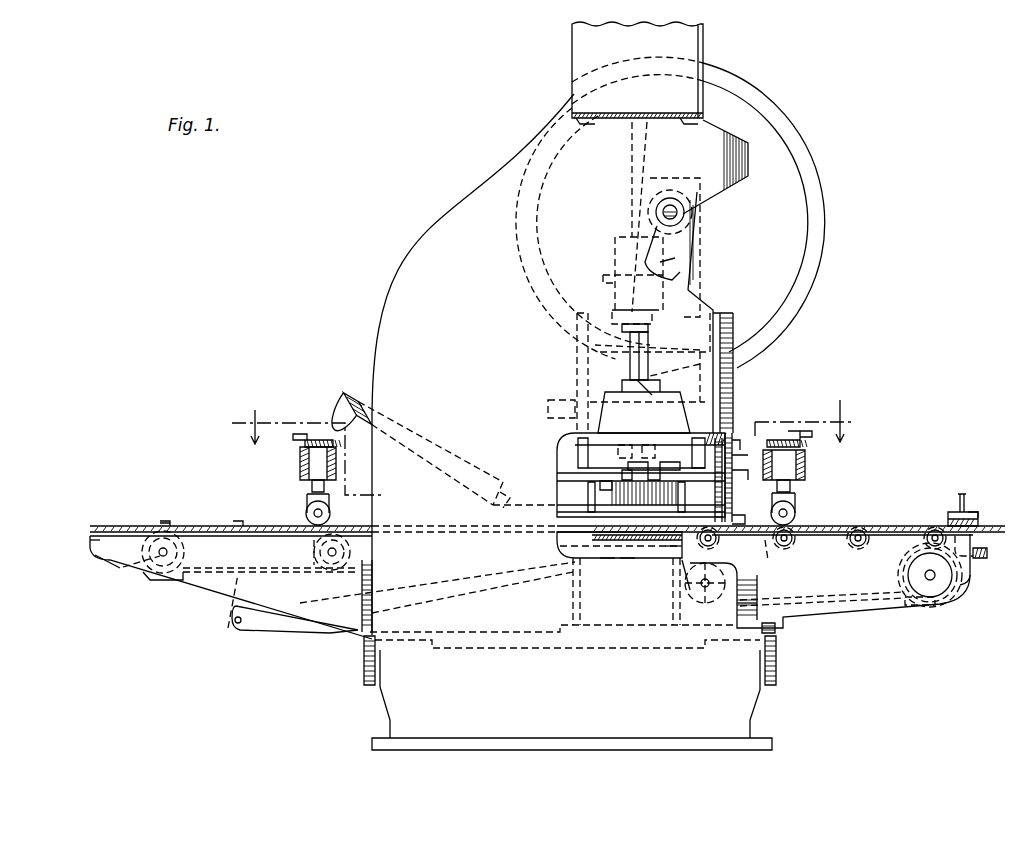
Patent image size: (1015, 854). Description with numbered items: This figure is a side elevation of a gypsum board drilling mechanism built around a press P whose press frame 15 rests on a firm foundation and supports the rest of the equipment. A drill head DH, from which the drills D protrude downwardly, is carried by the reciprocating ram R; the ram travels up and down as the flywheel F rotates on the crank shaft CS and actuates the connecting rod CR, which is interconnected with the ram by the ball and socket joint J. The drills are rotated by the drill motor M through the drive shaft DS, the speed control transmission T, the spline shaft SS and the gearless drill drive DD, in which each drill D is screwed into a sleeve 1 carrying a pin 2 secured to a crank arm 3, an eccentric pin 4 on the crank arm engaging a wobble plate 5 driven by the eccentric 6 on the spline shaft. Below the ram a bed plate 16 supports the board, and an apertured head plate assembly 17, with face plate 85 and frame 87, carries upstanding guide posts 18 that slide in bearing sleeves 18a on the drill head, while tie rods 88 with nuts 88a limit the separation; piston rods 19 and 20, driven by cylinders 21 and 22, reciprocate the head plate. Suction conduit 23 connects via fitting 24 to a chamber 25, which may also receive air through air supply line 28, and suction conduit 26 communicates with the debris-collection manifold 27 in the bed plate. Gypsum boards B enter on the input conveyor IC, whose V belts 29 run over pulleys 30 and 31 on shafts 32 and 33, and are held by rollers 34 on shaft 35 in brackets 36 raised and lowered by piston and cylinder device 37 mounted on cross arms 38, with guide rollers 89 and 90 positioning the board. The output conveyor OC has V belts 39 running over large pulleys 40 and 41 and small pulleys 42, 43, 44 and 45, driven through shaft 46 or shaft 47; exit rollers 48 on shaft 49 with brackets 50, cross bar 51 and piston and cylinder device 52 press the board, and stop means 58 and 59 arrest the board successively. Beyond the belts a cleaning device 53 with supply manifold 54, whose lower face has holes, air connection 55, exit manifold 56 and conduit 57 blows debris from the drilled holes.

The drill motor M is at (576, 55).
The flywheel F is at (825, 197).
The press P is at (382, 292).
The press frame 15 is at (432, 230).
The drive shaft DS is at (630, 152).
The speed control transmission T is at (612, 247).
The crank shaft CS is at (684, 215).
The connecting rod CR is at (692, 248).
The spline shaft SS is at (621, 347).
The ram R is at (590, 439).
The ball and socket joint J is at (722, 364).
The drill head DH is at (557, 477).
The gearless drill drive DD is at (590, 460).
The drill D is at (726, 508).
The gypsum board B is at (152, 516).
The input conveyor IC is at (217, 583).
The output conveyor OC is at (884, 615).
The sleeve 1 is at (629, 474).
The pin 2 is at (543, 436).
The crank arm 3 is at (638, 460).
The pin 4 is at (726, 443).
The wobble plate 5 is at (668, 458).
The eccentric 6 is at (637, 380).
The bed plate 16 is at (568, 540).
The head plate assembly 17 is at (560, 533).
The guide post 18 is at (560, 497).
The bearing sleeve 18a is at (566, 450).
The piston rod 19 is at (726, 462).
The piston rod 20 is at (566, 487).
The cylinder 21 is at (728, 440).
The cylinder 22 is at (558, 432).
The suction conduit 23 is at (345, 400).
The fitting 24 is at (498, 506).
The chamber 25 is at (677, 568).
The suction conduit 26 is at (266, 632).
The debris-collection manifold 27 is at (624, 562).
The air supply line 28 is at (733, 522).
The V belt 29 is at (232, 606).
The pulley 30 is at (118, 567).
The pulley 31 is at (318, 552).
The shaft 32 is at (163, 557).
The shaft 33 is at (332, 560).
The roller 34 is at (305, 512).
The shaft 35 is at (312, 501).
The bracket 36 is at (310, 490).
The piston and cylinder device 37 is at (305, 444).
The cross arm 38 is at (300, 462).
The V belt 39 is at (100, 545).
The large pulley 40 is at (962, 588).
The large pulley 41 is at (738, 582).
The small pulley 42 is at (928, 541).
The small pulley 43 is at (858, 548).
The small pulley 44 is at (789, 548).
The small pulley 45 is at (716, 546).
The shaft 46 is at (927, 576).
The shaft 47 is at (742, 603).
The exit roller 48 is at (798, 521).
The shaft 49 is at (795, 514).
The bracket 50 is at (792, 508).
The cross bar 51 is at (805, 468).
The piston and cylinder device 52 is at (802, 442).
The cleaning device 53 is at (969, 513).
The supply manifold 54 is at (950, 521).
The connection 55 is at (961, 508).
The exit manifold 56 is at (960, 543).
The conduit 57 is at (983, 558).
The stop means 58 is at (670, 548).
The stop means 59 is at (767, 548).
The face plate 85 is at (606, 560).
The frame 87 is at (573, 550).
The tie rod 88 is at (726, 493).
The nut 88a is at (575, 465).
The roller 89 is at (165, 523).
The roller 90 is at (238, 523).